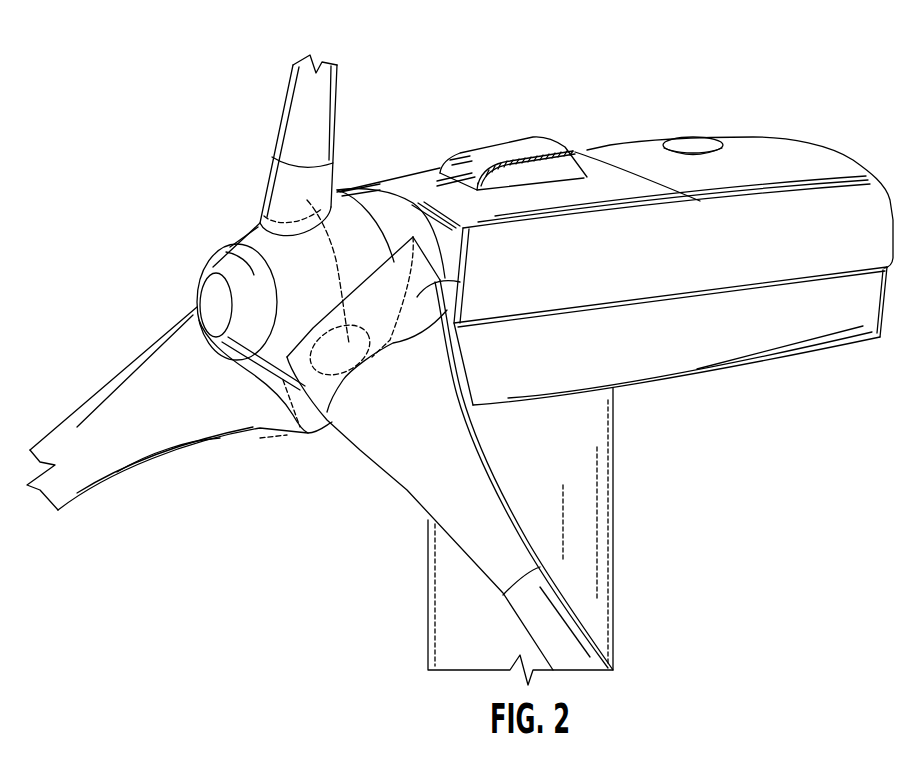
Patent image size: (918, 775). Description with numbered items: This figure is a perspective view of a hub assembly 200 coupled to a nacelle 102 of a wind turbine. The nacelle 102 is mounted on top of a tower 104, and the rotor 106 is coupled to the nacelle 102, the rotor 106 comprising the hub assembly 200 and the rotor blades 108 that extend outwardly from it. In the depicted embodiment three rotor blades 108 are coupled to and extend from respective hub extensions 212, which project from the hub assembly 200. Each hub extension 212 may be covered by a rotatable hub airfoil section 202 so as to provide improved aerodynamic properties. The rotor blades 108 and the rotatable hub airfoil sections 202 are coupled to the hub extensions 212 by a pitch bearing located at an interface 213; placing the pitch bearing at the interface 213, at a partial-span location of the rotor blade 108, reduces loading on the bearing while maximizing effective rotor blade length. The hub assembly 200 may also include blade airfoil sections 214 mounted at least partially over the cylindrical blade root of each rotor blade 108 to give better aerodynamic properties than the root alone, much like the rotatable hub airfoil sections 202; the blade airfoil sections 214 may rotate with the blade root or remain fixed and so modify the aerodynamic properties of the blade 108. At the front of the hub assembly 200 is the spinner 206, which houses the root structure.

The nacelle 102 is at (740, 137).
The tower 104 is at (613, 510).
The rotor 106 is at (143, 230).
The rotor blade 108 is at (519, 621).
The hub assembly 200 is at (243, 230).
The rotatable hub airfoil section 202 is at (335, 189).
The spinner 206 is at (224, 253).
The hub extension 212 is at (335, 262).
The interface 213 is at (334, 161).
The blade airfoil section 214 is at (280, 113).